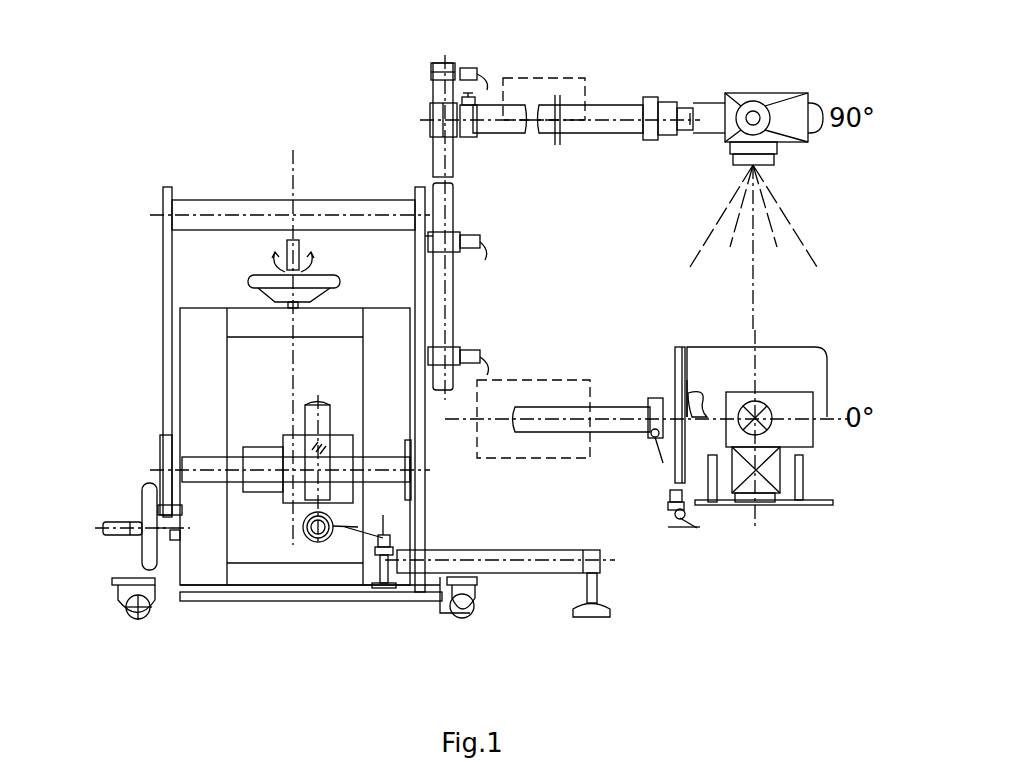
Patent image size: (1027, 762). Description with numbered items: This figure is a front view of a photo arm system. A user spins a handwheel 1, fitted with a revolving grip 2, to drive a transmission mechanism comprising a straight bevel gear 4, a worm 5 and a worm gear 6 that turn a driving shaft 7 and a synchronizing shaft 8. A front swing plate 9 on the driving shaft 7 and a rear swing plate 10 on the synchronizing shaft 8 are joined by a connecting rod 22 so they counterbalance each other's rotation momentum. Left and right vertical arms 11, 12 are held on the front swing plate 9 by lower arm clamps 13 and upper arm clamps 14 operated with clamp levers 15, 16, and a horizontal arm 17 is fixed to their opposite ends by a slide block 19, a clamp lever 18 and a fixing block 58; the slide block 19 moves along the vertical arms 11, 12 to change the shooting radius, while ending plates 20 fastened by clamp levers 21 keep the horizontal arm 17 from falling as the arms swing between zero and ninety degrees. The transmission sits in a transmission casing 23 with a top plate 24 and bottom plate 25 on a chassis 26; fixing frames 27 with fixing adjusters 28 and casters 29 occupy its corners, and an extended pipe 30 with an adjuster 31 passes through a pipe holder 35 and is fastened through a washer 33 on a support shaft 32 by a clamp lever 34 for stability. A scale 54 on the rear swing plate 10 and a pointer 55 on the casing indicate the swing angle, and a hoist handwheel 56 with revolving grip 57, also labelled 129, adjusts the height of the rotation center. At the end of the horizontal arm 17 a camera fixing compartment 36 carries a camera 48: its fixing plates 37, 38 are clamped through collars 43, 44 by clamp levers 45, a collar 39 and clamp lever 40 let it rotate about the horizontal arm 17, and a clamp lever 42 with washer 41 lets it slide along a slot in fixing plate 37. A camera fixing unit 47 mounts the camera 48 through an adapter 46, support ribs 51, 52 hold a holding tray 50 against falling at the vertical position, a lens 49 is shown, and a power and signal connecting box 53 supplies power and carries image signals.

The handwheel 1 is at (145, 505).
The revolving grip 2 is at (103, 528).
The straight bevel gear 4 is at (287, 578).
The worm 5 is at (312, 542).
The worm gear 6 is at (310, 507).
The driving shaft 7 is at (375, 482).
The synchronizing shaft 8 is at (207, 468).
The front swing plate 9 is at (423, 468).
The rear swing plate 10 is at (165, 272).
The vertical arm 11 is at (515, 226).
The vertical arm 12 is at (450, 300).
The lower arm clamp 13 is at (462, 350).
The upper arm clamp 14 is at (462, 238).
The clamp lever 15 is at (488, 372).
The clamp lever 16 is at (487, 258).
The horizontal arm 17 is at (628, 105).
The clamp lever 18 is at (470, 122).
The slide block 19 is at (430, 110).
The ending plate 20 is at (432, 66).
The clamp lever 21 is at (486, 80).
The connecting rod 22 is at (232, 200).
The transmission casing 23 is at (180, 332).
The top plate 24 is at (205, 308).
The bottom plate 25 is at (190, 600).
The chassis 26 is at (200, 587).
The fixing frame 27 is at (140, 620).
The fixing adjuster 28 is at (125, 615).
The caster 29 is at (130, 600).
The extended pipe 30 is at (540, 562).
The adjuster 31 is at (592, 618).
The support shaft 32 is at (383, 580).
The washer 33 is at (357, 530).
The clamp lever 34 is at (367, 558).
The pipe holder 35 is at (455, 592).
The camera fixing compartment 36 is at (735, 85).
The fixing plate 37 is at (668, 102).
The fixing plate 38 is at (815, 103).
The collar 39 is at (650, 138).
The clamp lever 40 is at (660, 440).
The washer 41 is at (683, 360).
The clamp lever 42 is at (700, 393).
The collar 43 is at (668, 505).
The collar 44 is at (690, 527).
The clamp lever 45 is at (680, 527).
The adapter 46 is at (755, 135).
The camera fixing unit 47 is at (765, 125).
The camera 48 is at (780, 93).
The lens 49 is at (733, 152).
The holding tray 50 is at (822, 348).
The support rib 51 is at (708, 462).
The support rib 52 is at (805, 470).
The power and signal connecting box 53 is at (570, 78).
The scale 54 is at (160, 440).
The pointer 55 is at (165, 513).
The hoist handwheel 56 is at (333, 275).
The revolving grip 57 is at (287, 245).
The fixing block 58 is at (470, 110).
The disc 129 is at (330, 284).